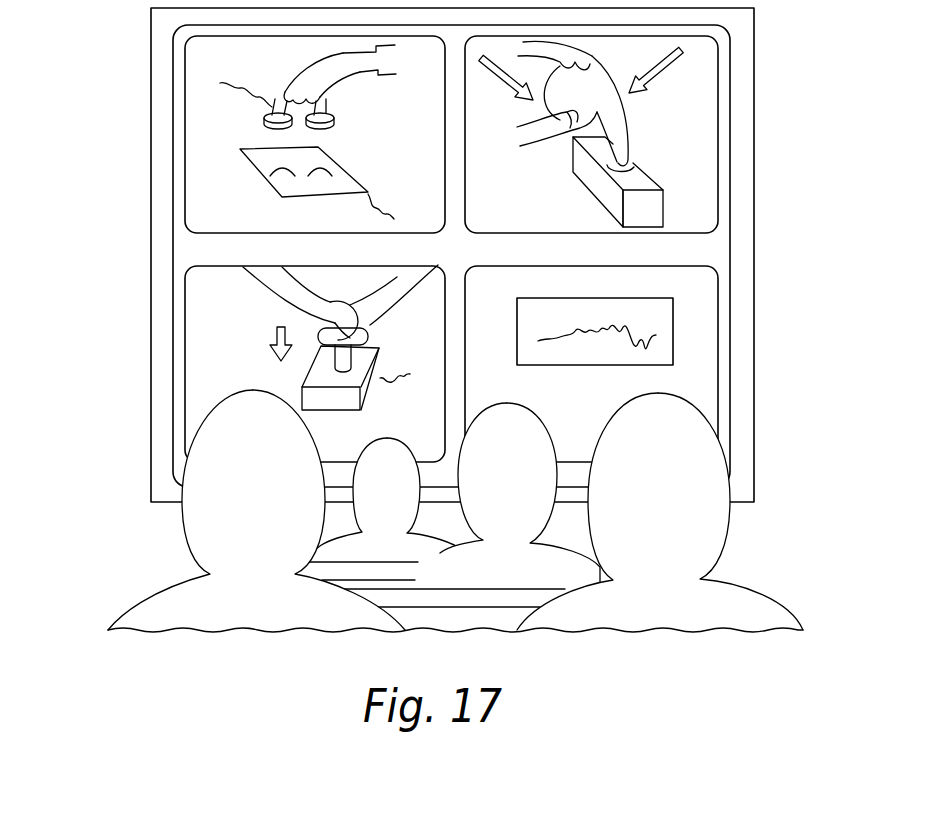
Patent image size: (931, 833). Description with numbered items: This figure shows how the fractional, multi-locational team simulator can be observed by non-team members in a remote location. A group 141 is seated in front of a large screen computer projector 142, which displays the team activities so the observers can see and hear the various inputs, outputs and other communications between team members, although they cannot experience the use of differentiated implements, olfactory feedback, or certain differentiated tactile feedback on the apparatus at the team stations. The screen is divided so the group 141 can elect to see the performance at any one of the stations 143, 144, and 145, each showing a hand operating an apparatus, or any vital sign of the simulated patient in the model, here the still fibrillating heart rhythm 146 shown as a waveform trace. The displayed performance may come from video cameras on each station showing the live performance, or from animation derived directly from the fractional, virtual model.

The group 141 is at (200, 558).
The large screen computer projector 142 is at (151, 90).
The station 143 is at (207, 138).
The station 144 is at (215, 312).
The station 145 is at (687, 140).
The fibrillating heart rhythm 146 is at (697, 334).